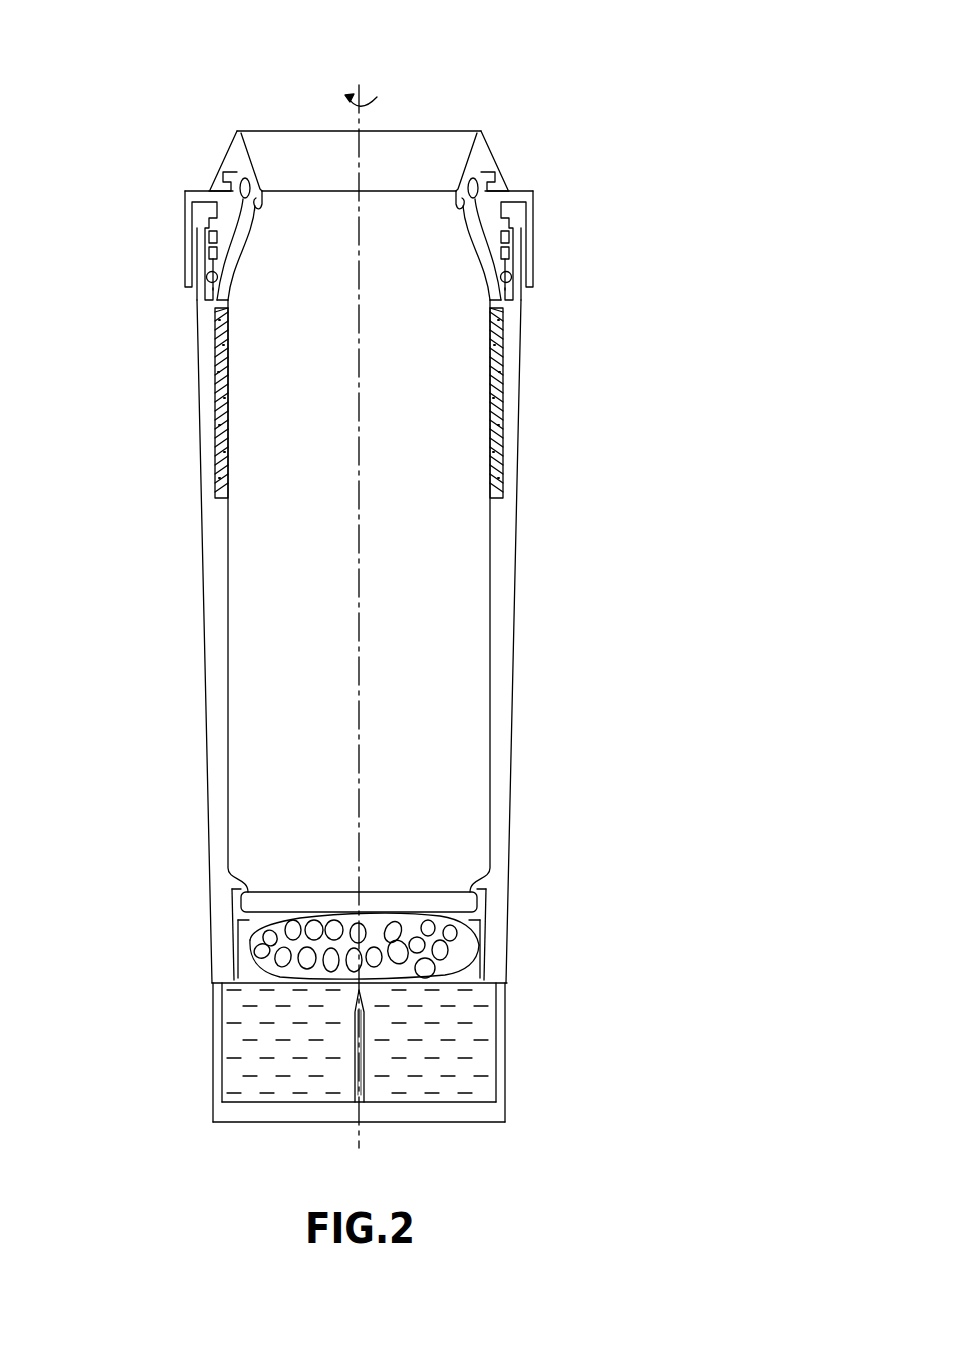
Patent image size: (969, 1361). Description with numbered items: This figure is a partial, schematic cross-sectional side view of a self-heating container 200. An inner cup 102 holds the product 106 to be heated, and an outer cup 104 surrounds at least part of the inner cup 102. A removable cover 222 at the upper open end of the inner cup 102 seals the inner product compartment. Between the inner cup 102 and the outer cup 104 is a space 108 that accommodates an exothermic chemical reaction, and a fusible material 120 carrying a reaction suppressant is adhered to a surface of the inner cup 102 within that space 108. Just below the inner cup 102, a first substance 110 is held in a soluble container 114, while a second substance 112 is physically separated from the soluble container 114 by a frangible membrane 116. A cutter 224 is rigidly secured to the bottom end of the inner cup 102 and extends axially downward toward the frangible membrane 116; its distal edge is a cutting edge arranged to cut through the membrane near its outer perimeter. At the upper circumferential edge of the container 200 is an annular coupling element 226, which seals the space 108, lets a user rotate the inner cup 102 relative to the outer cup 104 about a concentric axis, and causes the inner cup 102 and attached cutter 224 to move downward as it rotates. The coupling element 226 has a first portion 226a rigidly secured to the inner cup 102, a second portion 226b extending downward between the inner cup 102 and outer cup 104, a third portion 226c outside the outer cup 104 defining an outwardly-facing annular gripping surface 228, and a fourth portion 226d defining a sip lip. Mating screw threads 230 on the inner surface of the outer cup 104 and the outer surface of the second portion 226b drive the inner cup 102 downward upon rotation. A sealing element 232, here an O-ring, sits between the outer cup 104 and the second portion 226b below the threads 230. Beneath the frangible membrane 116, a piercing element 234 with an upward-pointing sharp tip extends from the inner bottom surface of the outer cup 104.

The self-heating container 200 is at (600, 106).
The removable cover 222 is at (434, 134).
The annular coupling element 226 is at (573, 180).
The first portion 226a is at (273, 140).
The second portion 226b is at (226, 276).
The third portion 226c is at (184, 256).
The fourth portion 226d is at (230, 140).
The annular gripping surface 228 is at (176, 227).
The mating screw threads 230 is at (218, 238).
The sealing element 232 is at (211, 282).
The fusible material 120 is at (507, 382).
The product 106 is at (320, 521).
The inner cup 102 is at (492, 582).
The space 108 is at (503, 648).
The outer cup 104 is at (517, 713).
The cutter 224 is at (488, 922).
The first substance 110 is at (460, 944).
The soluble container 114 is at (265, 970).
The frangible membrane 116 is at (285, 984).
The second substance 112 is at (488, 1058).
The piercing element 234 is at (356, 1084).